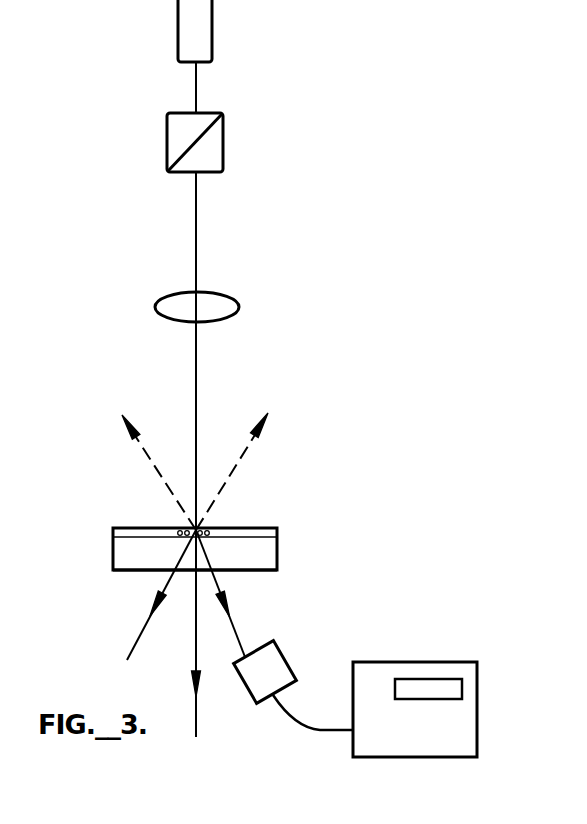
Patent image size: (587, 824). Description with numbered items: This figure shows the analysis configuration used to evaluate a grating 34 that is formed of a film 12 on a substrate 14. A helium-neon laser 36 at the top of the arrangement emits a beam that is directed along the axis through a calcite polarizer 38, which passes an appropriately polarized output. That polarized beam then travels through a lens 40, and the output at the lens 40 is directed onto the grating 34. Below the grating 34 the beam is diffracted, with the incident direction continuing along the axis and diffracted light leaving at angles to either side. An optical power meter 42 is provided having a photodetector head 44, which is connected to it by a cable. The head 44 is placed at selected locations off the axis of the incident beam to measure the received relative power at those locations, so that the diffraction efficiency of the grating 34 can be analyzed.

The film 12 is at (113, 528).
The substrate 14 is at (113, 570).
The grating 34 is at (105, 552).
The helium-neon laser 36 is at (178, 28).
The calcite polarizer 38 is at (167, 136).
The lens 40 is at (166, 298).
The optical power meter 42 is at (477, 692).
The photodetector head 44 is at (266, 636).